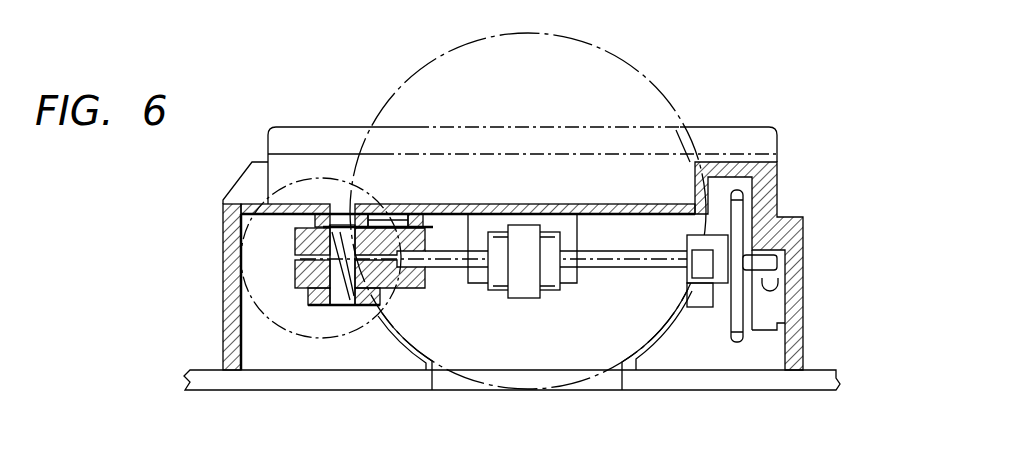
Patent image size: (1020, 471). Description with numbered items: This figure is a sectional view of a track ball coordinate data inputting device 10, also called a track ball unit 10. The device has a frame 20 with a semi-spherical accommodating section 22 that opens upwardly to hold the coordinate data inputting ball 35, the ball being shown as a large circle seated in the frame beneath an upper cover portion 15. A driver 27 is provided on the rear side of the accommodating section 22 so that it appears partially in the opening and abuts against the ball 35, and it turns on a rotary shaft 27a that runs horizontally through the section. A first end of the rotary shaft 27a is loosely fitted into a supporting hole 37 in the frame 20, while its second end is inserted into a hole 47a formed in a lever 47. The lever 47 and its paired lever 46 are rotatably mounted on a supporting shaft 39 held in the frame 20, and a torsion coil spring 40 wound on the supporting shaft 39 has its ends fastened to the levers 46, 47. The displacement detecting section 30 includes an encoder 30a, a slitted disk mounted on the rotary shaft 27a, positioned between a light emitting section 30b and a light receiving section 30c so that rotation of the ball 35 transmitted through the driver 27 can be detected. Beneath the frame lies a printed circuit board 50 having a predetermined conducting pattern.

The track ball coordinate data inputting device 10 is at (731, 98).
The cover 15 is at (286, 147).
The frame 20 is at (781, 162).
The semi-spherical accommodating section 22 is at (677, 130).
The driver 27 is at (520, 298).
The rotary shaft 27a is at (612, 270).
The displacement detecting section 30 is at (711, 336).
The encoder 30a is at (760, 190).
The light emitting section 30b is at (760, 332).
The light receiving section 30c is at (790, 292).
The coordinate data inputting ball 35 is at (636, 65).
The supporting hole 37 is at (777, 252).
The supporting shaft 39 is at (313, 306).
The torsion coil spring 40 is at (397, 227).
The lever 46 is at (293, 242).
The lever 47 is at (357, 305).
The hole 47a is at (434, 215).
The printed circuit board 50 is at (222, 390).